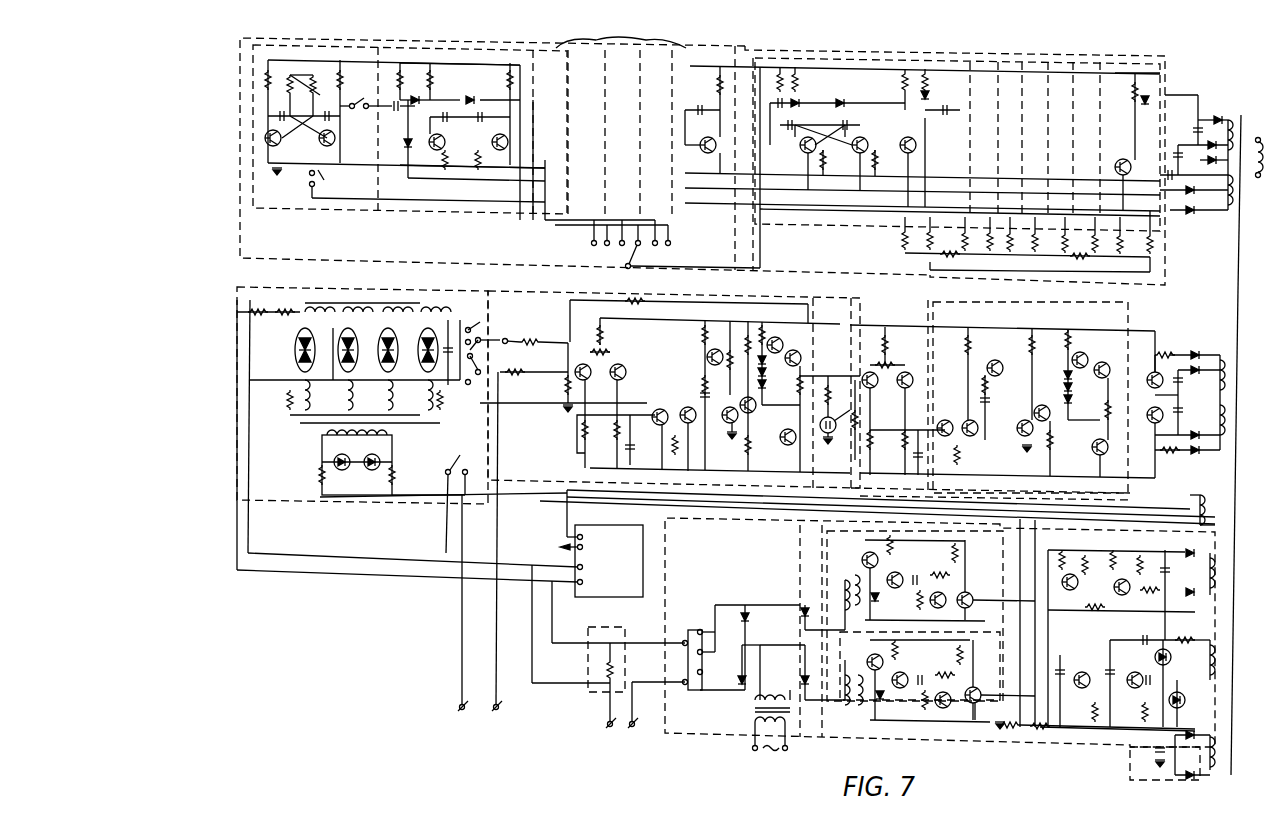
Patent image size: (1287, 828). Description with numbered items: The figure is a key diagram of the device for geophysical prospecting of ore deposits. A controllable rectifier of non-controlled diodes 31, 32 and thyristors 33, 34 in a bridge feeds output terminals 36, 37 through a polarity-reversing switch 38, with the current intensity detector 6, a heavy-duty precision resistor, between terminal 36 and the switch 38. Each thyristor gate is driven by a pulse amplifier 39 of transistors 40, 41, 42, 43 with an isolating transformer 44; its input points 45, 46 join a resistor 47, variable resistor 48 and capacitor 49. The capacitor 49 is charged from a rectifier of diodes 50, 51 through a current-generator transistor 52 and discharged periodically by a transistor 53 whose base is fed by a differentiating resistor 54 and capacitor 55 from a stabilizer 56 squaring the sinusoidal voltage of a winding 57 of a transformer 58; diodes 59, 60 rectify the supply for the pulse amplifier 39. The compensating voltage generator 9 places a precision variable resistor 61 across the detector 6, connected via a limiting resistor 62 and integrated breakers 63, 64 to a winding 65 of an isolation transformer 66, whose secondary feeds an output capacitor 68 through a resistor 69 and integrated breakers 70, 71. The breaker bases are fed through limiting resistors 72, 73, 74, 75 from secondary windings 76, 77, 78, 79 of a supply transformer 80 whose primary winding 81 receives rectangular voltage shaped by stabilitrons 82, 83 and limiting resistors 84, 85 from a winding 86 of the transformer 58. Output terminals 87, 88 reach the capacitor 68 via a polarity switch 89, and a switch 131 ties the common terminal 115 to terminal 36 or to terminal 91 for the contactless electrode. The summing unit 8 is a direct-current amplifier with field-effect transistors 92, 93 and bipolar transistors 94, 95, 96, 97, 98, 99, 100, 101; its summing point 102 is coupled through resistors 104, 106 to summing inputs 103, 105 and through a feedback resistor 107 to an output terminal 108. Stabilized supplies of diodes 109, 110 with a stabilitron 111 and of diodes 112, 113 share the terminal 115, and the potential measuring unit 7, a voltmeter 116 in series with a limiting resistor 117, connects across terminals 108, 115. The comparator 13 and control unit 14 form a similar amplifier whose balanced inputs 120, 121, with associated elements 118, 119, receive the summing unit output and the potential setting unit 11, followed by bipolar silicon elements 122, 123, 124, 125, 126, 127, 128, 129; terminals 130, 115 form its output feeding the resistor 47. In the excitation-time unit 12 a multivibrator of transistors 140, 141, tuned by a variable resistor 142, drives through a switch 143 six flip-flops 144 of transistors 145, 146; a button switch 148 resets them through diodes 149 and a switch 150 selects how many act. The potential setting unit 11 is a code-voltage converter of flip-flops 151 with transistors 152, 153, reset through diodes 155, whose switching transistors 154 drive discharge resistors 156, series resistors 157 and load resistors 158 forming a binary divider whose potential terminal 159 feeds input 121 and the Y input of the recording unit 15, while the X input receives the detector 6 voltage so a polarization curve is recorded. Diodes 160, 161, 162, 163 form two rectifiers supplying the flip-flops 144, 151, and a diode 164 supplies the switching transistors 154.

The current intensity detector 6 is at (618, 628).
The potential measuring unit 7 is at (820, 492).
The summing unit 8 is at (545, 484).
The compensating voltage generator 9 is at (342, 292).
The unit for setting electrochemical reaction potentials 11 is at (797, 50).
The unit for setting the excitation time 12 is at (238, 232).
The comparator 13 is at (869, 297).
The control unit 14 is at (1130, 309).
The recording unit 15 is at (601, 561).
The non-controlled diode 31 is at (750, 617).
The non-controlled diode 32 is at (746, 680).
The controlled diode (thyristor) 33 is at (821, 605).
The controlled diode (thyristor) 34 is at (825, 680).
The output terminal 36 is at (612, 735).
The output terminal 37 is at (656, 717).
The switch 38 is at (698, 630).
The pulse amplifier 39 is at (998, 660).
The transistor 40 is at (961, 634).
The transistor 41 is at (931, 658).
The transistor 42 is at (904, 611).
The transistor 43 is at (862, 605).
The transformer 44 is at (862, 632).
The point 45 is at (984, 721).
The point 46 is at (1002, 728).
The resistor 47 is at (1015, 742).
The variable resistor 48 is at (1107, 742).
The capacitor 49 is at (1100, 655).
The diode 50 is at (1121, 580).
The diode 51 is at (1217, 563).
The transistor 52 is at (1109, 585).
The transistor 53 is at (1108, 678).
The resistor 54 is at (1112, 714).
The capacitor 55 is at (1152, 651).
The stabilizer 56 is at (1177, 685).
The winding 57 is at (1211, 646).
The transformer 58 is at (1245, 140).
The diode 59 is at (1189, 744).
The diode 60 is at (1175, 780).
The precision variable resistor 61 is at (268, 301).
The limiting resistor 62 is at (288, 301).
The integrated breaker 63 is at (313, 347).
The integrated breaker 64 is at (351, 341).
The winding 65 is at (361, 343).
The isolation transformer 66 is at (400, 302).
The output capacitor 68 is at (467, 341).
The resistor 69 is at (442, 340).
The integrated breaker 70 is at (397, 348).
The integrated breaker 71 is at (427, 347).
The limiting resistor 72 is at (286, 397).
The limiting resistor 73 is at (344, 395).
The limiting resistor 74 is at (382, 395).
The limiting resistor 75 is at (422, 395).
The secondary winding 76 is at (301, 395).
The secondary winding 77 is at (325, 416).
The secondary winding 78 is at (405, 424).
The secondary winding 79 is at (445, 405).
The supply transformer 80 is at (318, 447).
The primary winding 81 is at (392, 445).
The stabilitron 82 is at (345, 475).
The stabilitron 83 is at (357, 475).
The limiting resistor 84 is at (308, 478).
The limiting resistor 85 is at (396, 480).
The winding 86 is at (1206, 499).
The output terminal 87 is at (488, 346).
The output terminal 88 is at (468, 377).
The switch 89 is at (485, 332).
The terminal 91 is at (461, 616).
The field-effect transistor 92 is at (580, 361).
The field-effect transistor 93 is at (617, 361).
The bipolar silicon transistor 94 is at (658, 405).
The bipolar silicon transistor 95 is at (686, 431).
The bipolar silicon transistor 96 is at (712, 350).
The bipolar silicon transistor 97 is at (738, 429).
The bipolar silicon transistor 98 is at (749, 396).
The bipolar silicon transistor 99 is at (781, 339).
The bipolar silicon transistor 100 is at (779, 363).
The bipolar silicon transistor 101 is at (782, 419).
The summing point 102 is at (553, 373).
The summing input 103 is at (525, 329).
The resistor 104 is at (548, 333).
The summing input 105 is at (501, 554).
The resistor 106 is at (534, 382).
The feedback resistor 107 is at (689, 307).
The output terminal 108 is at (817, 376).
The diode 109 is at (1195, 349).
The diode 110 is at (1199, 378).
The stabilitron 111 is at (1147, 359).
The diode 112 is at (1199, 415).
The diode 113 is at (1187, 416).
The common terminal 115 is at (564, 410).
The measuring instrument 116 is at (830, 437).
The limiting resistor 117 is at (825, 396).
The resistor 118 is at (879, 411).
The resistor 119 is at (902, 346).
The input 120 is at (866, 369).
The input 121 is at (916, 369).
The bipolar silicon diode 122 is at (943, 416).
The bipolar silicon diode 123 is at (971, 442).
The bipolar silicon diode 124 is at (988, 383).
The bipolar silicon diode 125 is at (1021, 420).
The bipolar silicon diode 126 is at (1045, 402).
The bipolar silicon diode 127 is at (1083, 349).
The bipolar silicon diode 128 is at (1093, 377).
The bipolar silicon diode 129 is at (1088, 448).
The terminal 130 is at (1087, 384).
The switch 131 is at (469, 496).
The transistor 140 is at (291, 145).
The transistor 141 is at (336, 138).
The variable resistor 142 is at (322, 82).
The switch 143 is at (377, 92).
The flip-flop 144 is at (365, 45).
The transistor 145 is at (441, 161).
The transistor 146 is at (494, 152).
The button switch 148 is at (308, 188).
The diode 149 is at (395, 139).
The switch 150 is at (652, 244).
The flip-flop 151 is at (878, 58).
The transistor 152 is at (806, 148).
The transistor 153 is at (858, 148).
The switching transistor 154 is at (1027, 141).
The diode 155 is at (790, 118).
The discharge resistor 156 is at (1033, 243).
The series connected resistor 157 is at (1027, 265).
The load resistor 158 is at (1034, 242).
The potential terminal 159 is at (1064, 270).
The diode 160 is at (1182, 256).
The diode 161 is at (1194, 192).
The diode 162 is at (1200, 161).
The diode 163 is at (1182, 130).
The diode 164 is at (1218, 110).